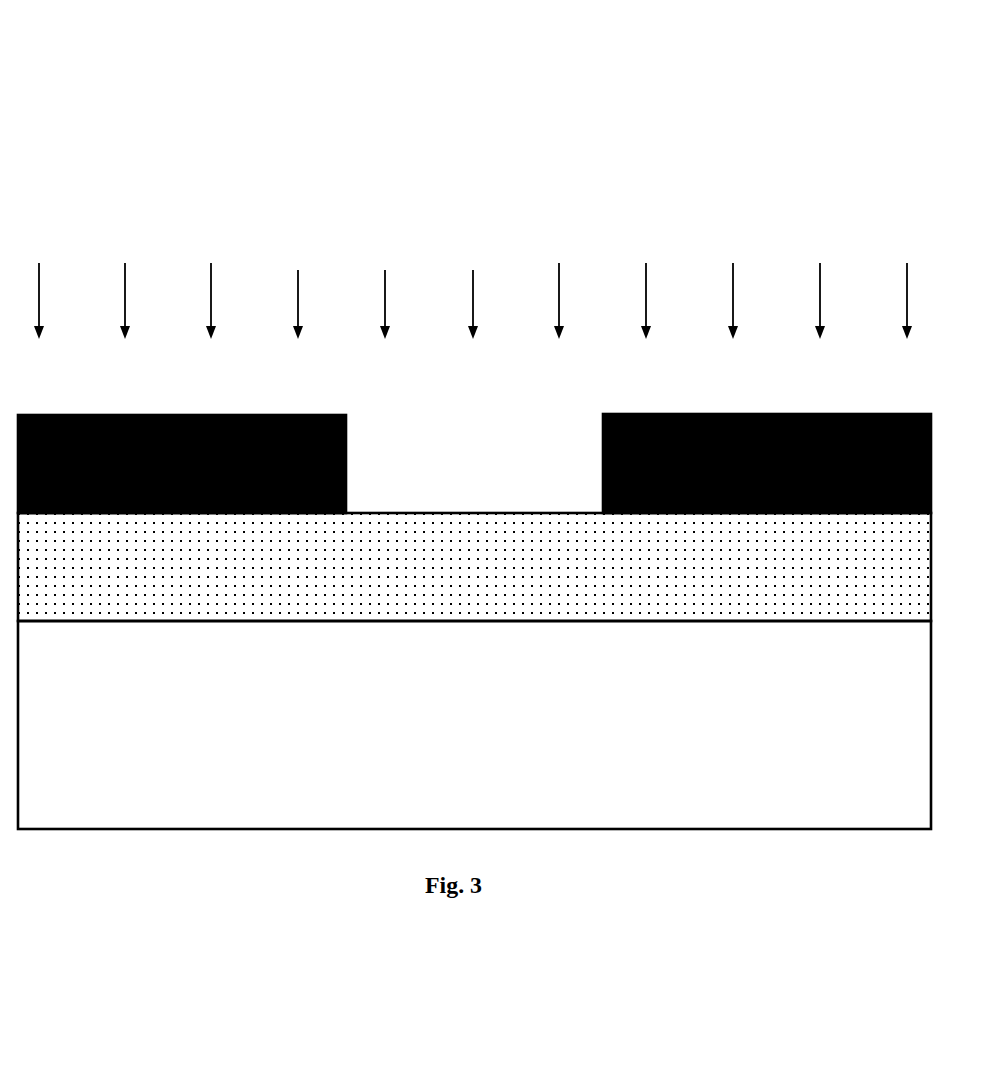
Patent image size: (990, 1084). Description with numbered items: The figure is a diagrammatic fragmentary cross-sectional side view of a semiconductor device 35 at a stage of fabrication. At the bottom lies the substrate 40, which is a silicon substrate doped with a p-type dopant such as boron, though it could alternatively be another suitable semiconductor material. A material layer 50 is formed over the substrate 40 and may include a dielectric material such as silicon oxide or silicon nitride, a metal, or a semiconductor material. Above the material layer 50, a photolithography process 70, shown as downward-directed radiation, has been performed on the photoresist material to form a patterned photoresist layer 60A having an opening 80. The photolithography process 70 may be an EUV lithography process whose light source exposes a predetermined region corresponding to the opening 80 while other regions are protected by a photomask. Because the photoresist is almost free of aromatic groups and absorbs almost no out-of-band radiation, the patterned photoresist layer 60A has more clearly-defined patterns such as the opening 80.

The semiconductor device 35 is at (474, 455).
The substrate 40 is at (486, 746).
The material layer 50 is at (485, 580).
The patterned photoresist layer 60A is at (210, 484).
The photolithography process 70 is at (559, 282).
The opening 80 is at (463, 416).